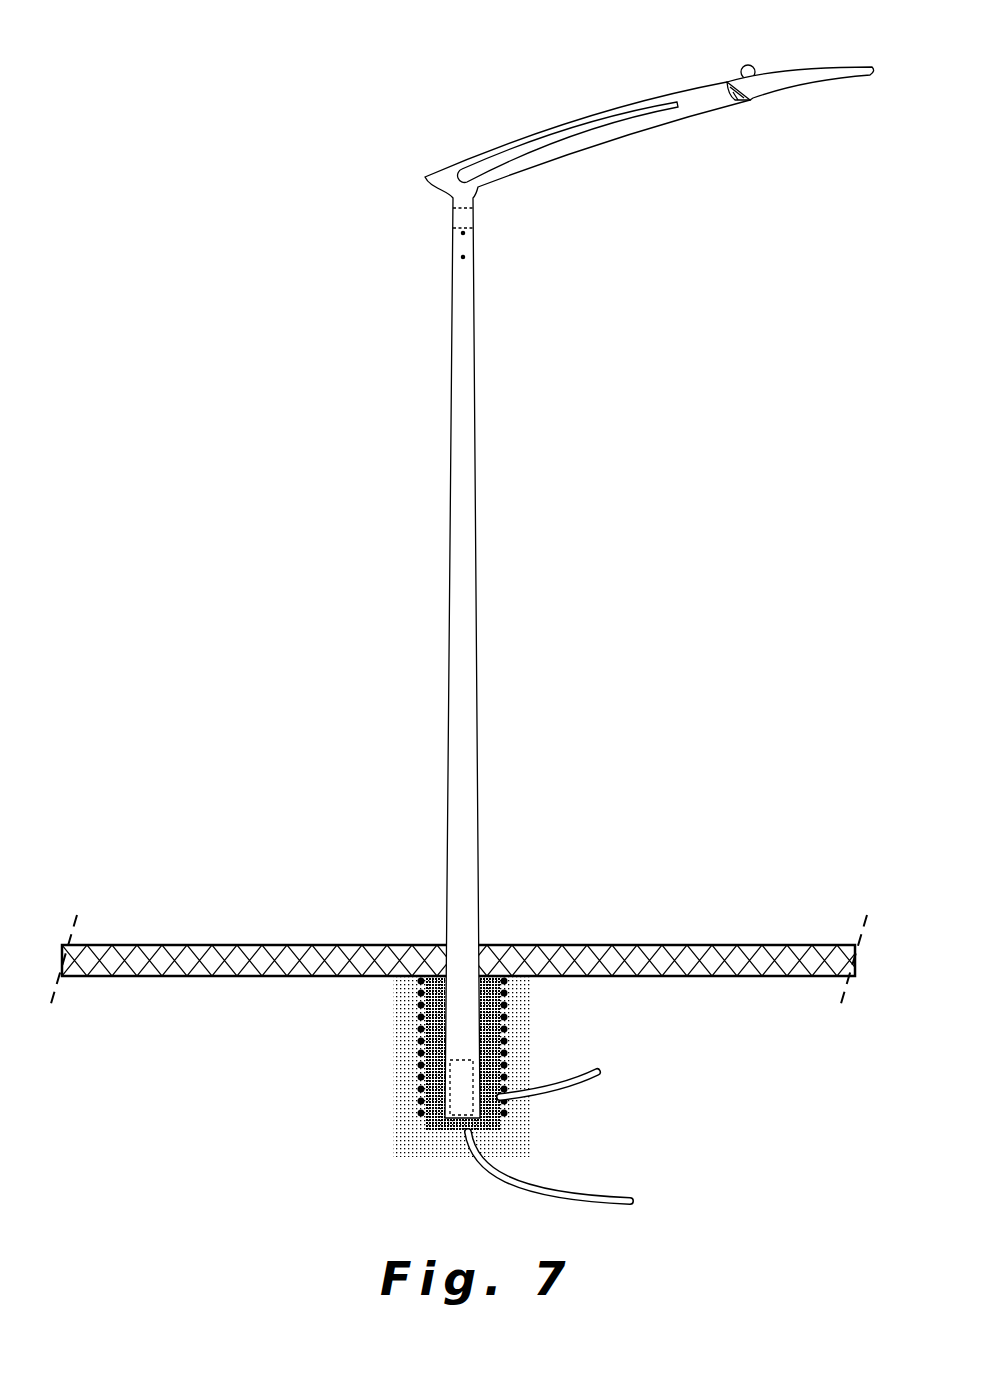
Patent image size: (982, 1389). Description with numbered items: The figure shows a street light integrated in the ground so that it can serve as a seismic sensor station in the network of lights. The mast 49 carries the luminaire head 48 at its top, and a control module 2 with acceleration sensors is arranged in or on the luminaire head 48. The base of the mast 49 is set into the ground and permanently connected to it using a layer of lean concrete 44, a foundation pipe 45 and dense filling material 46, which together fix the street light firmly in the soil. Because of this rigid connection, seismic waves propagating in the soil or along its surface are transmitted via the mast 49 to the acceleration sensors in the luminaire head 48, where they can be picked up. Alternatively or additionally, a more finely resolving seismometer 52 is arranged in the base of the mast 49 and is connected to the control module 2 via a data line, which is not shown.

The group controller 2 is at (743, 67).
The luminaire head 48 is at (778, 118).
The mast 49 is at (462, 475).
The layer of lean concrete 44 is at (523, 1028).
The foundation pipe 45 is at (422, 1047).
The dense filling material 46 is at (420, 1123).
The seismometer 52 is at (467, 1087).